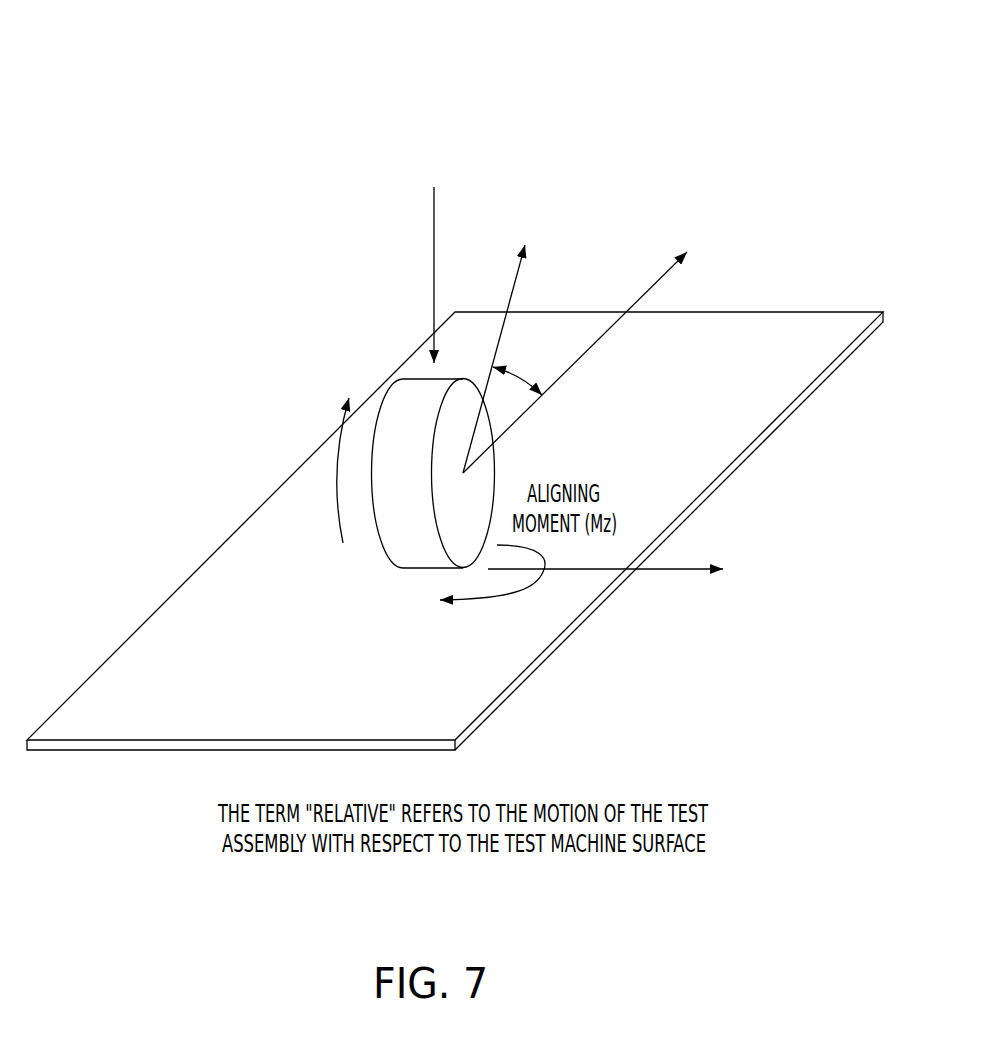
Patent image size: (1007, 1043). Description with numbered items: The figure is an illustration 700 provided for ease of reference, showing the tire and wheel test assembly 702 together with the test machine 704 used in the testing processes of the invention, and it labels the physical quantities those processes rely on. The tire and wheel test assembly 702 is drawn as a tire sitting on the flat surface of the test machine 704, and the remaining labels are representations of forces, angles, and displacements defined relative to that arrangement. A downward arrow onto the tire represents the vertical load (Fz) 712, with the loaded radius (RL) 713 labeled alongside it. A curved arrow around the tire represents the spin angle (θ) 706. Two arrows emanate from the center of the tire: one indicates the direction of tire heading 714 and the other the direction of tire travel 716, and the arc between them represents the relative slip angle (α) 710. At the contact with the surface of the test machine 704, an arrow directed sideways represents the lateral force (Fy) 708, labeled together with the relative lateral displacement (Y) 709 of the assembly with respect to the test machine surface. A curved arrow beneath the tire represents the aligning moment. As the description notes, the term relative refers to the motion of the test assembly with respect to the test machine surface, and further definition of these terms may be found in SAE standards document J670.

The illustration 700 is at (455, 378).
The tire and wheel test assembly 702 is at (398, 555).
The test machine 704 is at (510, 690).
The spin angle (θ) 706 is at (335, 462).
The lateral force (Fy) 708 is at (832, 543).
The relative lateral displacement (Y) 709 is at (780, 628).
The relative slip angle (α) 710 is at (532, 378).
The vertical load (Fz) 712 is at (283, 137).
The loaded radius (RL) 713 is at (283, 168).
The direction of tire heading 714 is at (525, 248).
The direction of tire travel 716 is at (688, 252).